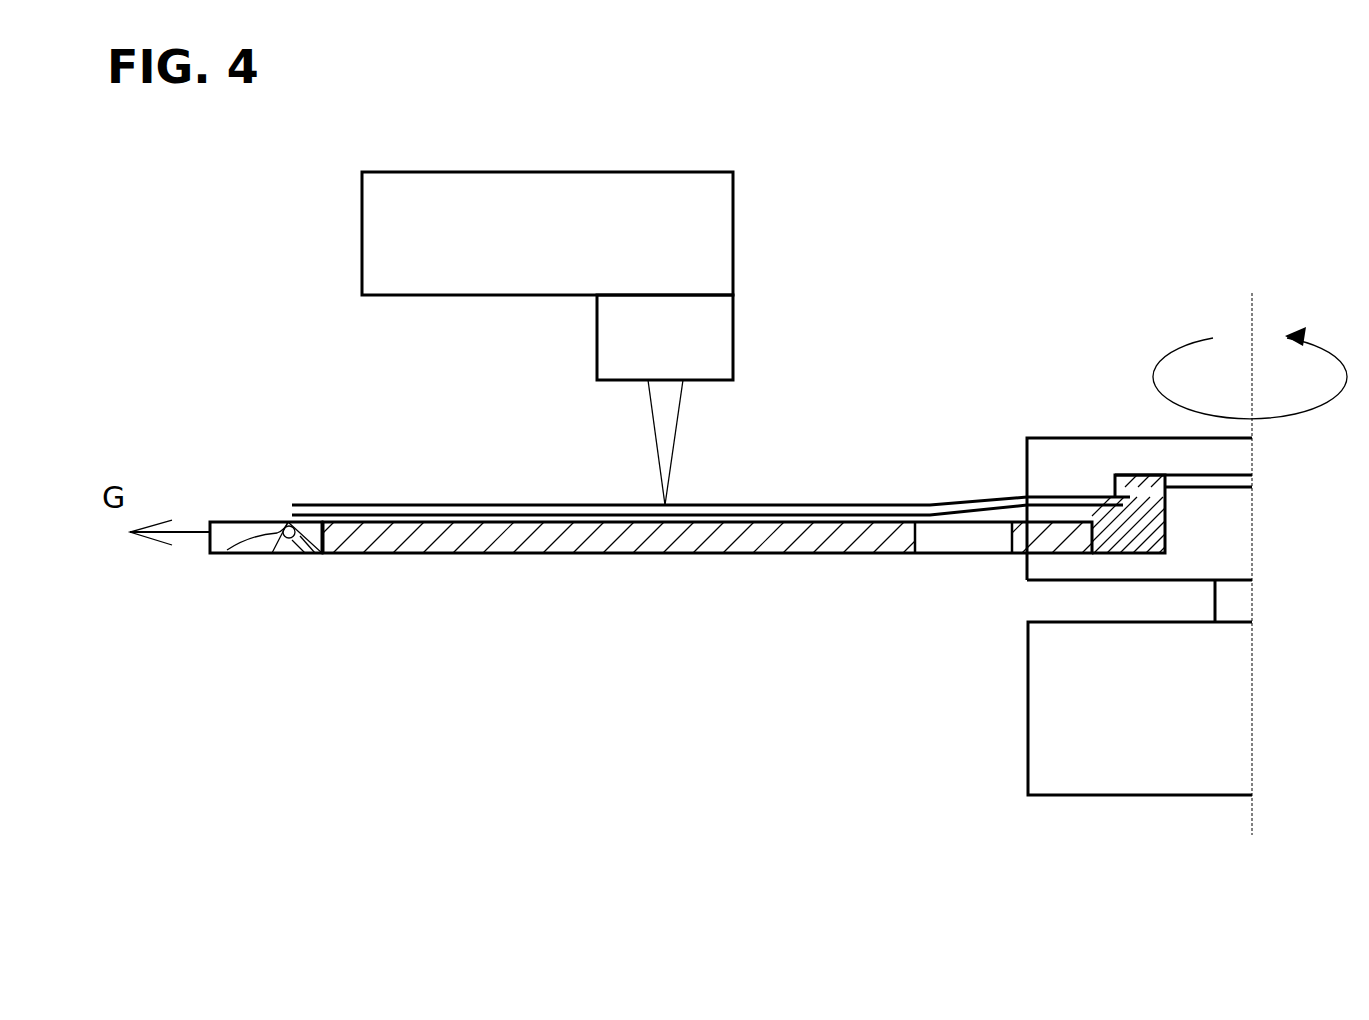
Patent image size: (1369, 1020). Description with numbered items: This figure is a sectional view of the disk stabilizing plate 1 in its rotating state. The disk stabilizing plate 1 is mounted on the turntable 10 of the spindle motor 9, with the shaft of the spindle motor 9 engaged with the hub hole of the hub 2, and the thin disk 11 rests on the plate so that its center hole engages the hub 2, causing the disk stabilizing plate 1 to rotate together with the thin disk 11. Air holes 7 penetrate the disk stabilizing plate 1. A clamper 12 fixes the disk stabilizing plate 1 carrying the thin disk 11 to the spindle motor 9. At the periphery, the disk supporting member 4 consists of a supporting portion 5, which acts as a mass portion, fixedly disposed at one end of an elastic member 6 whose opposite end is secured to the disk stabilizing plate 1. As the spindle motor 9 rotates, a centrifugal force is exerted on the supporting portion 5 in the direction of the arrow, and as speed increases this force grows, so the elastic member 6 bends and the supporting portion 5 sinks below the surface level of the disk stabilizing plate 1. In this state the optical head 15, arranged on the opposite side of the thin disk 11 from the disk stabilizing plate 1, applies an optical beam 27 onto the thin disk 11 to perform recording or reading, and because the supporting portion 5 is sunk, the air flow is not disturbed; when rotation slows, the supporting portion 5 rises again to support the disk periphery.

The disk stabilizing plate 1 is at (597, 555).
The hub 2 is at (1140, 500).
The disk supporting member 4 is at (337, 583).
The supporting portion 5 is at (218, 553).
The elastic member 6 is at (280, 552).
The air holes 7 is at (977, 545).
The spindle motor 9 is at (1033, 738).
The turntable 10 is at (1033, 578).
The thin disk 11 is at (815, 505).
The clamper 12 is at (1055, 438).
The optical head 15 is at (668, 247).
The optical beam 27 is at (652, 420).